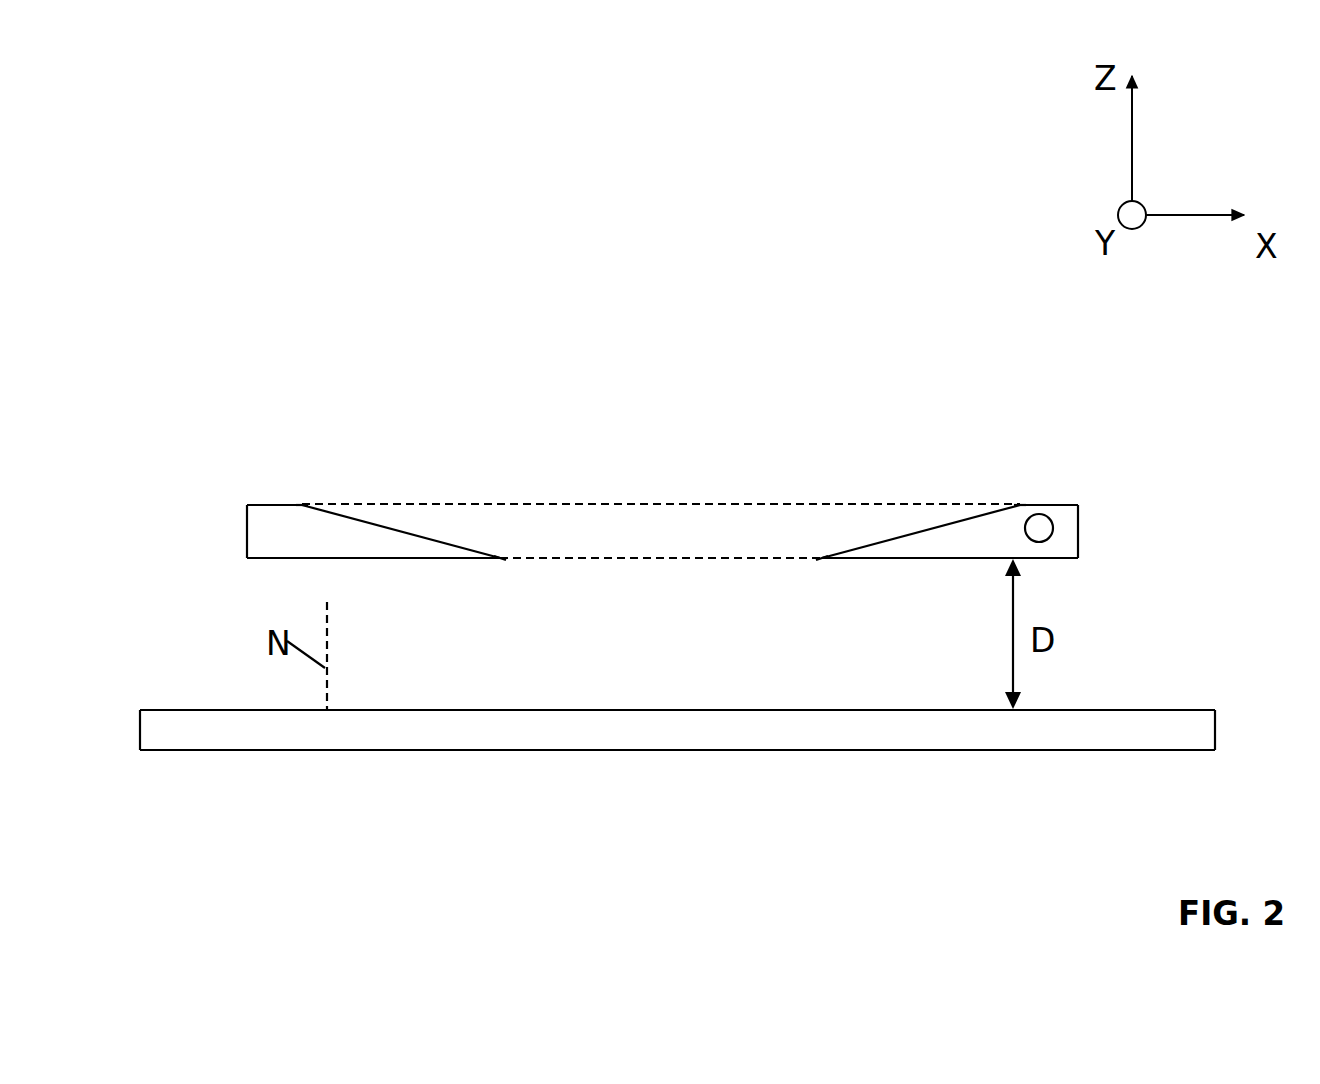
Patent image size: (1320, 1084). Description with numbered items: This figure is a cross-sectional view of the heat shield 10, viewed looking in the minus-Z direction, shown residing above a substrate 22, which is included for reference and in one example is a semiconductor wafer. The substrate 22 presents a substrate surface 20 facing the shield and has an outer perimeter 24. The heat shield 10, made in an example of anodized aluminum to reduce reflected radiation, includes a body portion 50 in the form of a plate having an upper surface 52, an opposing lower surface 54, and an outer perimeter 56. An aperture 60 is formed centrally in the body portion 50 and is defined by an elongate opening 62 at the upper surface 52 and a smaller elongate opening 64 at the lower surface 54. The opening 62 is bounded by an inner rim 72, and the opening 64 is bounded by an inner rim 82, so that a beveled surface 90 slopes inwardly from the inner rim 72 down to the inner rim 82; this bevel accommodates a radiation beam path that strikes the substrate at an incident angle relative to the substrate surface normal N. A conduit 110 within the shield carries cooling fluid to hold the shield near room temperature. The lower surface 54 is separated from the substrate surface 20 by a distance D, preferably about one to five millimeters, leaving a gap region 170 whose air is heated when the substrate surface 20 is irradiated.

The heat shield 10 is at (1170, 471).
The substrate surface 20 is at (695, 737).
The substrate 22 is at (1147, 735).
The outer perimeter of substrate 24 is at (248, 752).
The body portion 50 is at (307, 518).
The upper surface 52 is at (273, 505).
The lower surface 54 is at (287, 560).
The outer perimeter of body portion 56 is at (247, 532).
The aperture 60 is at (452, 398).
The opening at upper surface 62 is at (654, 492).
The opening at lower surface 64 is at (626, 571).
The inner rim 72 is at (300, 506).
The inner rim 82 is at (500, 557).
The beveled surface 90 is at (400, 531).
The conduit 110 is at (1038, 528).
The gap region 170 is at (680, 677).